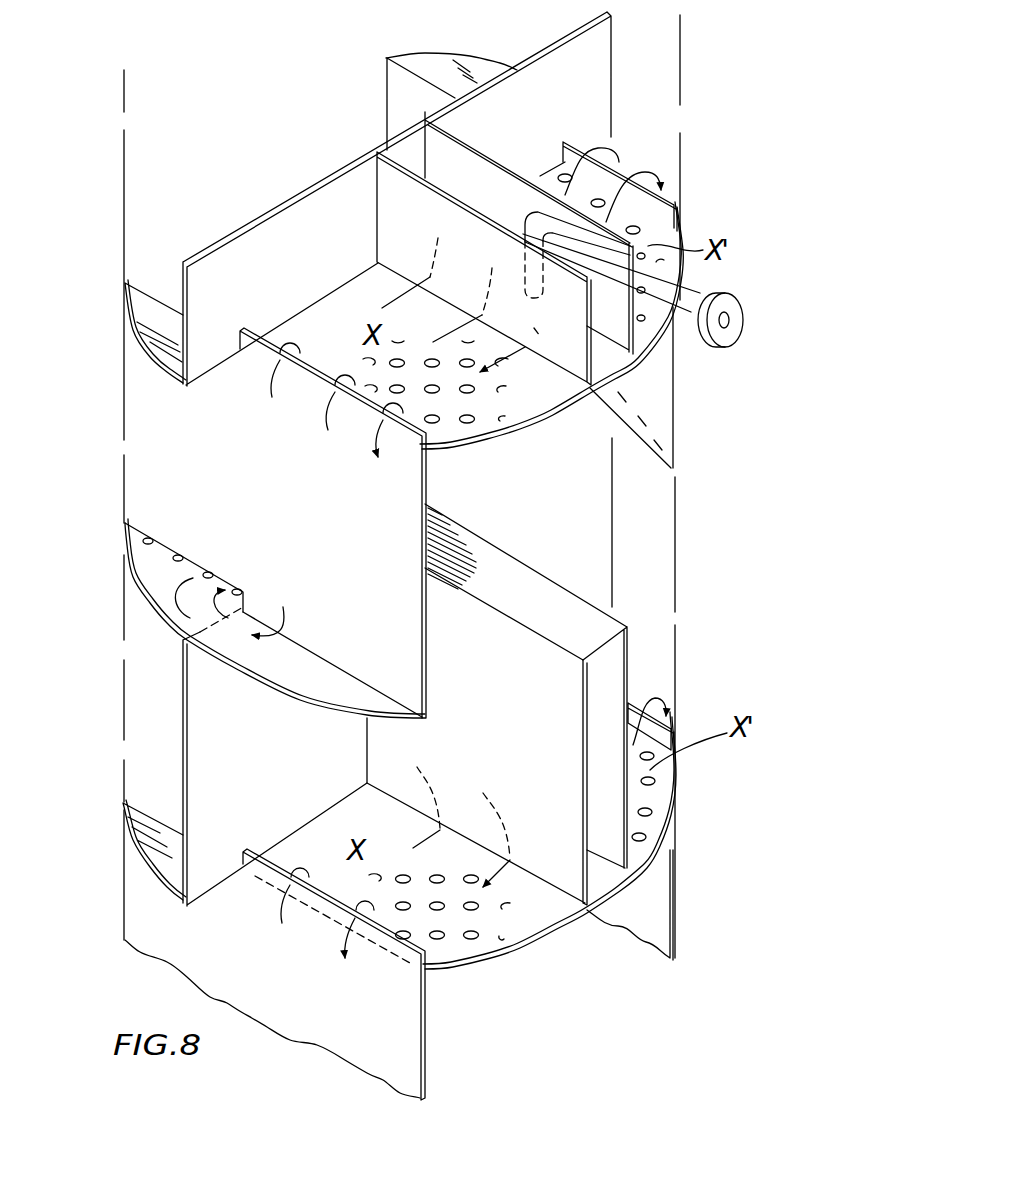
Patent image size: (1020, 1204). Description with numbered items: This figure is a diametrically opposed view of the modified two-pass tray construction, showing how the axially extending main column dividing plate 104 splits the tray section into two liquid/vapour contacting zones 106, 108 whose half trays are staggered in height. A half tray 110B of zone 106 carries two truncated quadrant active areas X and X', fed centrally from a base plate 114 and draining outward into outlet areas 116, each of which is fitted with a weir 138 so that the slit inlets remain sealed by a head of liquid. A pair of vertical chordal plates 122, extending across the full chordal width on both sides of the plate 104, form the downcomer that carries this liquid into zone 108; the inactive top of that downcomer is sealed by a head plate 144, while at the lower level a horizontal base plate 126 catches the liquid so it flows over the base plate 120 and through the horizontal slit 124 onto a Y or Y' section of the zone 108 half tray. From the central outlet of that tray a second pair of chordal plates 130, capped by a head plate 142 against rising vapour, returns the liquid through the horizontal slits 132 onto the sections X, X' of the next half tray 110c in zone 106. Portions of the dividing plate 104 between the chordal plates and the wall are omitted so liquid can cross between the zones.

The main column dividing plate 104 is at (297, 233).
The liquid/vapour contacting zone 106 is at (548, 406).
The liquid/vapour contacting zone 108 is at (405, 94).
The half tray 110B is at (518, 424).
The half tray 110c is at (662, 780).
The base plate 114 is at (605, 362).
The outlet area 116 is at (627, 170).
The base plate 120 is at (165, 580).
The chordal plate 122 is at (312, 517).
The horizontal slit 124 is at (163, 553).
The horizontal base plate 126 is at (260, 662).
The chordal plate 130 is at (528, 732).
The horizontal slit 132 is at (640, 352).
The weir 138 is at (657, 235).
The head plate 142 is at (574, 625).
The head plate 144 is at (445, 70).